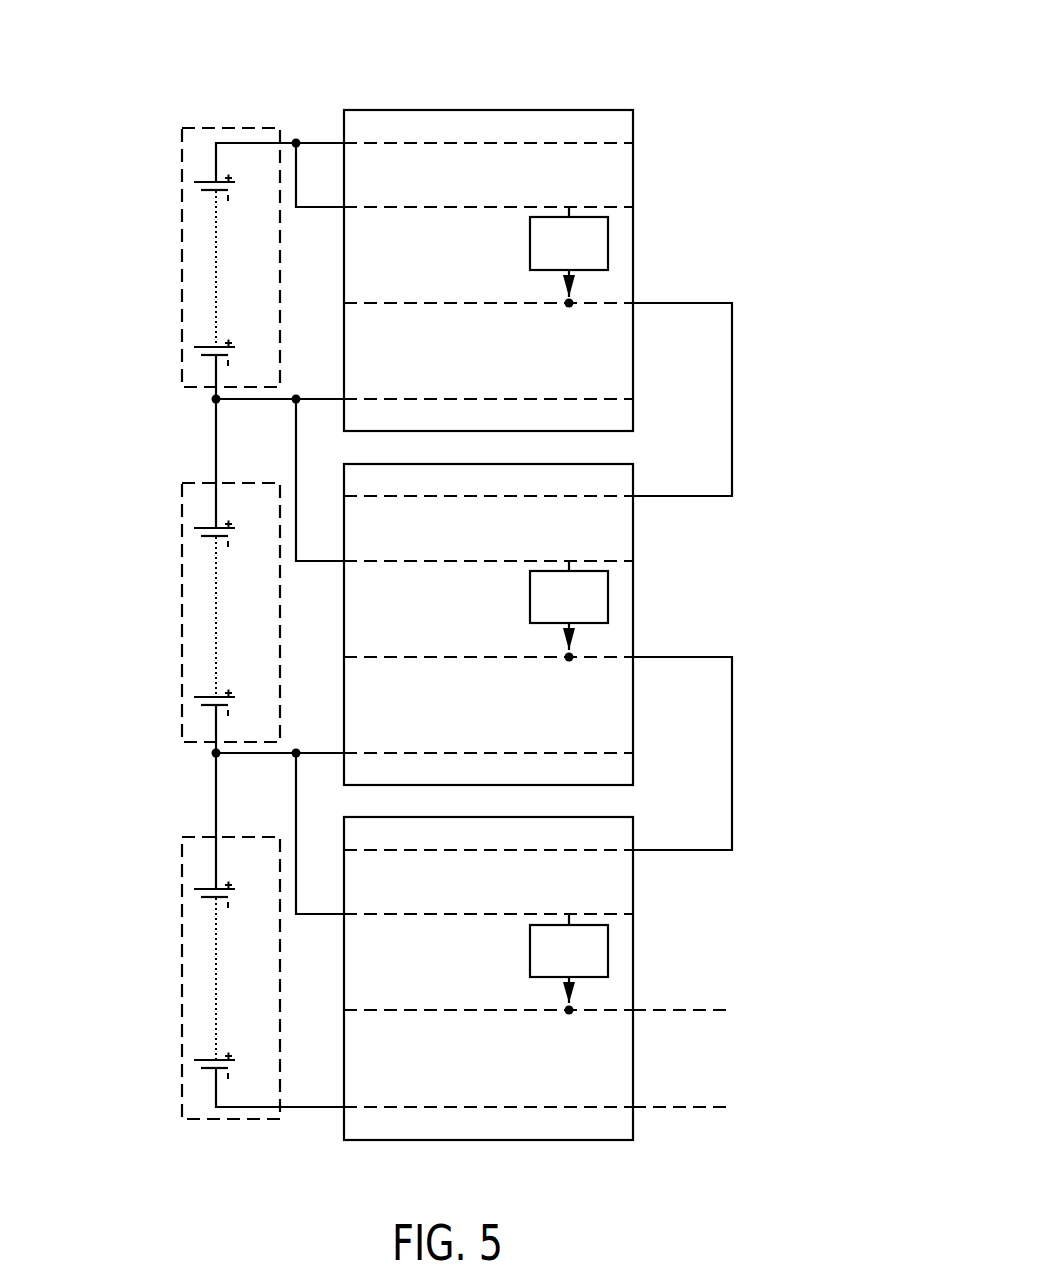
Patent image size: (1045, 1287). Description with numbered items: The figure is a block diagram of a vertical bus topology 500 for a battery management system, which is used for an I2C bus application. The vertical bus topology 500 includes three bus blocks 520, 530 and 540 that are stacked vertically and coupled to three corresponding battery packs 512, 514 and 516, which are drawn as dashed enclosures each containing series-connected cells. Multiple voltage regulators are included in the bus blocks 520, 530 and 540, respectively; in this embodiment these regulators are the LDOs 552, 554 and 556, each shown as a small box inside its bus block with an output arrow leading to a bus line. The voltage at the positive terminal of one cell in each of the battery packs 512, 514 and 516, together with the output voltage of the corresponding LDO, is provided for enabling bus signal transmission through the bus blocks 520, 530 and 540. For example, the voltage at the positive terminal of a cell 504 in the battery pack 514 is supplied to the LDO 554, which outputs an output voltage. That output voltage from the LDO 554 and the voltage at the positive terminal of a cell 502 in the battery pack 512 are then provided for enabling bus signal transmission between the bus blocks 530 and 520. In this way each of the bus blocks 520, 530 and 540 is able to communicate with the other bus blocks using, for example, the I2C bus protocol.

The vertical bus topology 500 is at (273, 97).
The cell 502 is at (217, 883).
The cell 504 is at (217, 525).
The battery pack 512 is at (182, 941).
The battery pack 514 is at (182, 599).
The battery pack 516 is at (182, 252).
The bus block 520 is at (634, 837).
The bus block 530 is at (634, 481).
The bus block 540 is at (634, 127).
The LDO 552 is at (530, 952).
The LDO 554 is at (530, 595).
The LDO 556 is at (530, 242).